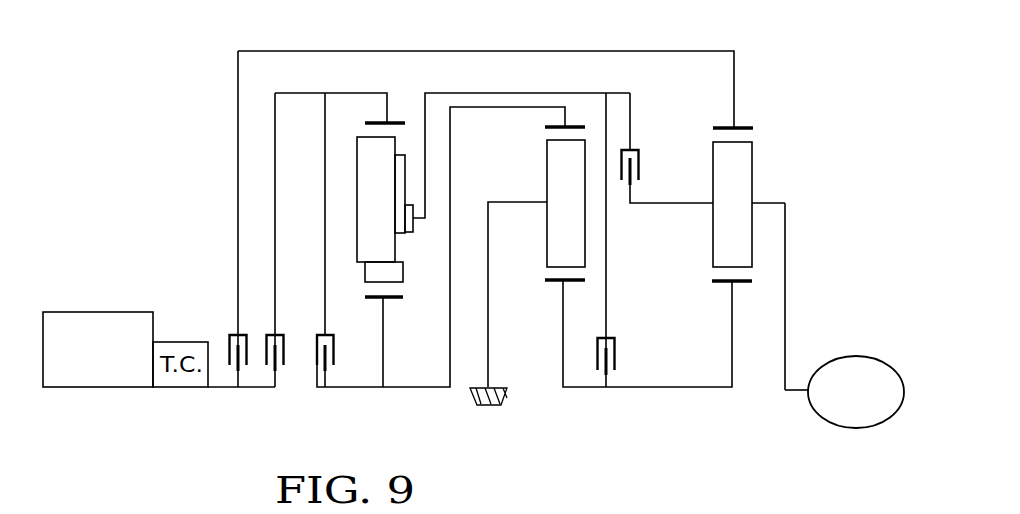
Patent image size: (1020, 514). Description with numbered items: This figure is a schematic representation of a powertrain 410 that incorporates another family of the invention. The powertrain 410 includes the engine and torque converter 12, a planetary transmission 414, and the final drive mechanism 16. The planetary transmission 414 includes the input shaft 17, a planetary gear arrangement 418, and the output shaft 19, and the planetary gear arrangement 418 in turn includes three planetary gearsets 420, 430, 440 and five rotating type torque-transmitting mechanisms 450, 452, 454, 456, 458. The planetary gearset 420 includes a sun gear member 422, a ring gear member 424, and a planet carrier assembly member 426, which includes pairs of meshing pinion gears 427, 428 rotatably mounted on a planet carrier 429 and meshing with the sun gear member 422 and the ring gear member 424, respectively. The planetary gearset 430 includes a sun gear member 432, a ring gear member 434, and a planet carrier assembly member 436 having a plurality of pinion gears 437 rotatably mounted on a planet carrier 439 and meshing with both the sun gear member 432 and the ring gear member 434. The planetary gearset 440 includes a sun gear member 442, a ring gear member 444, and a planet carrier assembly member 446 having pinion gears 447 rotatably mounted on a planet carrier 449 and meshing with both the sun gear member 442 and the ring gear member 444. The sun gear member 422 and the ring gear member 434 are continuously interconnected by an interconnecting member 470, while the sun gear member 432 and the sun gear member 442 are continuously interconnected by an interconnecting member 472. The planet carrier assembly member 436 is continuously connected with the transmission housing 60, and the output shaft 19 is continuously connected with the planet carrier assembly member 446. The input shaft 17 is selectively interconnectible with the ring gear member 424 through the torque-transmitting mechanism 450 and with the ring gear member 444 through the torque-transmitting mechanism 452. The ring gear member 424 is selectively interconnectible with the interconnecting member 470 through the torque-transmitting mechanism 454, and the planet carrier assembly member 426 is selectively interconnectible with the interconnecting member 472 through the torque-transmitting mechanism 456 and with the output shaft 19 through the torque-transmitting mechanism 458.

The engine and torque converter 12 is at (99, 309).
The final drive mechanism 16 is at (884, 351).
The input shaft 17 is at (221, 388).
The output shaft 19 is at (795, 392).
The transmission housing 60 is at (500, 398).
The powertrain 410 is at (165, 249).
The planetary transmission 414 is at (512, 41).
The planetary gear arrangement 418 is at (442, 364).
The planetary gearset 420 is at (364, 306).
The sun gear member 422 is at (394, 299).
The ring gear member 424 is at (398, 121).
The planet carrier assembly member 426 is at (354, 134).
The pinion gear 427 is at (360, 218).
The pinion gear 428 is at (400, 170).
The planet carrier 429 is at (414, 229).
The planetary gearset 430 is at (535, 272).
The sun gear member 432 is at (585, 281).
The ring gear member 434 is at (553, 126).
The planet carrier assembly member 436 is at (541, 140).
The pinion gear 437 is at (548, 180).
The planet carrier 439 is at (518, 204).
The planetary gearset 440 is at (708, 286).
The sun gear member 442 is at (742, 283).
The ring gear member 444 is at (722, 127).
The planet carrier assembly member 446 is at (709, 139).
The pinion gear 447 is at (716, 173).
The planet carrier 449 is at (768, 203).
The torque-transmitting mechanism 450 is at (284, 342).
The torque-transmitting mechanism 452 is at (227, 337).
The torque-transmitting mechanism 454 is at (333, 368).
The torque-transmitting mechanism 456 is at (640, 326).
The torque-transmitting mechanism 458 is at (637, 173).
The interconnecting member 470 is at (413, 387).
The interconnecting member 472 is at (655, 387).